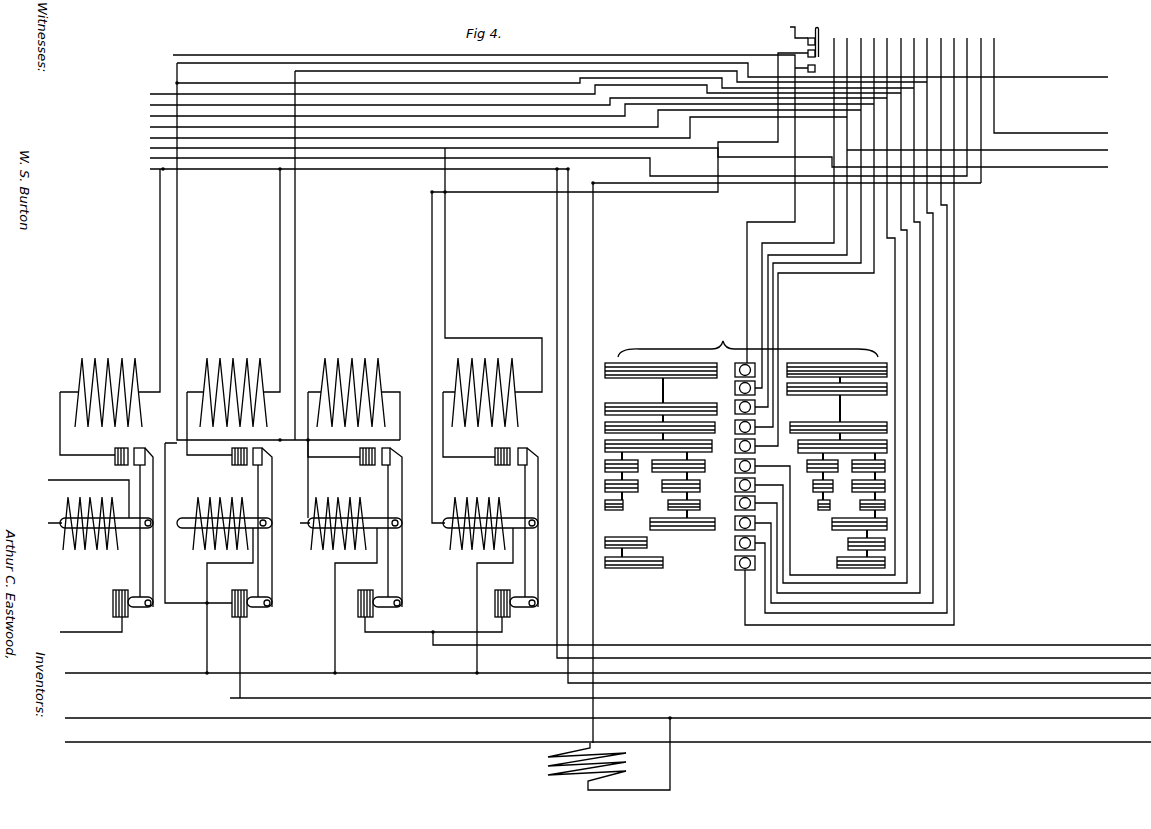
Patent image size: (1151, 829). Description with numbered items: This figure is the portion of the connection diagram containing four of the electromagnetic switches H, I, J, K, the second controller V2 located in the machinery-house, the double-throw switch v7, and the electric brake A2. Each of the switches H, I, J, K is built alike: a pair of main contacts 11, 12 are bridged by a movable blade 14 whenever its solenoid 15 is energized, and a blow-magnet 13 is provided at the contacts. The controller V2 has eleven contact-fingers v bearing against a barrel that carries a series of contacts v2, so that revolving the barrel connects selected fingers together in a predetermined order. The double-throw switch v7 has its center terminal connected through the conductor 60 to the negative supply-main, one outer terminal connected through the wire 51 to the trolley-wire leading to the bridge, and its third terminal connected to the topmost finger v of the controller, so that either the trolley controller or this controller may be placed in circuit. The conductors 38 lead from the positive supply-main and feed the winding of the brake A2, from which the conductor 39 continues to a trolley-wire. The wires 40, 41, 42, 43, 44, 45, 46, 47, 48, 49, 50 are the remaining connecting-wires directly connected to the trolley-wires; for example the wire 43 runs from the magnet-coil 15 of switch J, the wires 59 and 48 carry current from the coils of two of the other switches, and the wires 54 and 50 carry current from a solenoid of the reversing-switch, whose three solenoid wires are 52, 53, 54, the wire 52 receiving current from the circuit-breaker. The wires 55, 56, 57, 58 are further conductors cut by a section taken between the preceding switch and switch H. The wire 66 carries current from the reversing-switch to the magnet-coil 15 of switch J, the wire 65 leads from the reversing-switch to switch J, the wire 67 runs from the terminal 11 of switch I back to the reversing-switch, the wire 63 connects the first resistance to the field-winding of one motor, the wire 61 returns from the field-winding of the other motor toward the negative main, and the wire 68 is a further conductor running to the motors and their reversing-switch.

The main contact 11 is at (130, 616).
The main contact 12 is at (124, 447).
The blow-magnet 13 is at (301, 294).
The movable blade 14 is at (147, 448).
The solenoid 15 is at (480, 496).
The conductor 38 is at (608, 369).
The conductor 39 is at (981, 110).
The connecting-wire 40 is at (551, 98).
The connecting-wire 41 is at (854, 331).
The connecting-wire 42 is at (852, 317).
The wire 43 is at (846, 320).
The connecting-wire 44 is at (839, 307).
The connecting-wire 45 is at (832, 310).
The connecting-wire 46 is at (826, 298).
The connecting-wire 47 is at (819, 242).
The wire 48 is at (812, 224).
The connecting-wire 49 is at (805, 222).
The wire 50 is at (799, 204).
The wire 51 is at (788, 27).
The conductor 52 is at (635, 201).
The wire 53 is at (977, 142).
The wire 54 is at (1093, 159).
The wire 55 is at (531, 78).
The wire 56 is at (515, 89).
The wire 57 is at (508, 100).
The wire 58 is at (502, 111).
The wire 59 is at (497, 120).
The conductor 60 is at (488, 129).
The wire 61 is at (640, 410).
The wire 63 is at (638, 408).
The wire 65 is at (792, 637).
The wire 66 is at (608, 664).
The wire 67 is at (690, 690).
The wire 68 is at (608, 733).
The contact-finger v is at (734, 460).
The barrel contacts v2 is at (746, 465).
The second controller V2 is at (746, 444).
The double-throw switch v7 is at (806, 44).
The electric brake A2 is at (591, 754).
The electromagnetic switch H is at (123, 565).
The electromagnetic switch I is at (186, 565).
The electromagnetic switch J is at (312, 565).
The electromagnetic switch K is at (449, 565).